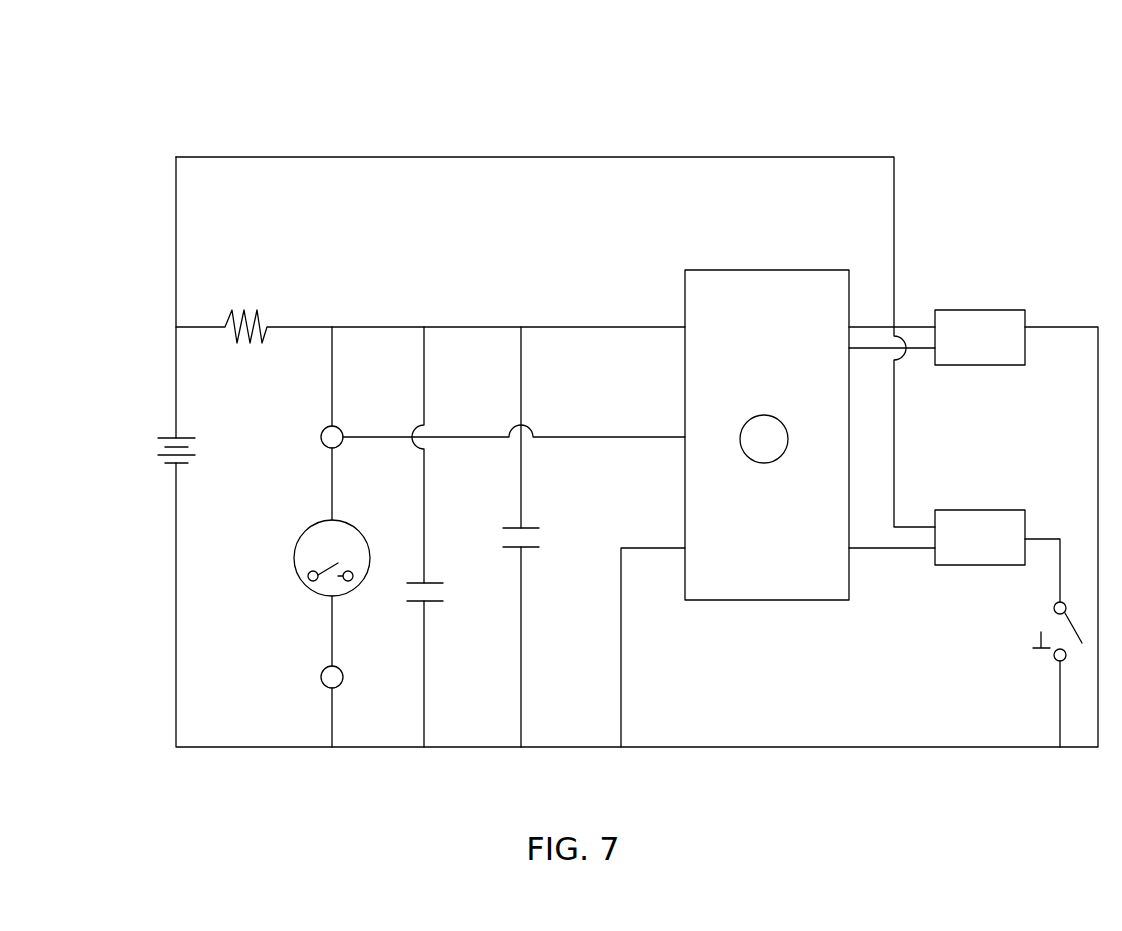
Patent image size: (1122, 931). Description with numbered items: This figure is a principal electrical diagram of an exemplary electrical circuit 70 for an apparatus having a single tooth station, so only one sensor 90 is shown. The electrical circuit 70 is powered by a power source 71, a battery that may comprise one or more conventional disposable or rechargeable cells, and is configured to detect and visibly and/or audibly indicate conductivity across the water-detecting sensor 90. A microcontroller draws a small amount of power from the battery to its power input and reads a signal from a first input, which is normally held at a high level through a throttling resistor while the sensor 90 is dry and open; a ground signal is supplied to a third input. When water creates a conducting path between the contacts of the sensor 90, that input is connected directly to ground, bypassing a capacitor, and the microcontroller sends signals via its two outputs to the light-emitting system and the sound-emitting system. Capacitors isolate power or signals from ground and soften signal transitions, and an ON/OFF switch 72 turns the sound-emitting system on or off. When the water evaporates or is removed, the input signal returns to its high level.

The electrical circuit 70 is at (512, 105).
The power source 71 is at (150, 468).
The ON/OFF switch 72 is at (1040, 660).
The sensor 90 is at (300, 590).